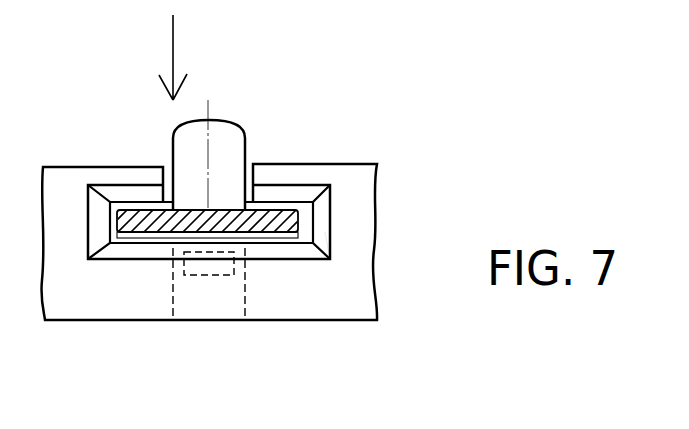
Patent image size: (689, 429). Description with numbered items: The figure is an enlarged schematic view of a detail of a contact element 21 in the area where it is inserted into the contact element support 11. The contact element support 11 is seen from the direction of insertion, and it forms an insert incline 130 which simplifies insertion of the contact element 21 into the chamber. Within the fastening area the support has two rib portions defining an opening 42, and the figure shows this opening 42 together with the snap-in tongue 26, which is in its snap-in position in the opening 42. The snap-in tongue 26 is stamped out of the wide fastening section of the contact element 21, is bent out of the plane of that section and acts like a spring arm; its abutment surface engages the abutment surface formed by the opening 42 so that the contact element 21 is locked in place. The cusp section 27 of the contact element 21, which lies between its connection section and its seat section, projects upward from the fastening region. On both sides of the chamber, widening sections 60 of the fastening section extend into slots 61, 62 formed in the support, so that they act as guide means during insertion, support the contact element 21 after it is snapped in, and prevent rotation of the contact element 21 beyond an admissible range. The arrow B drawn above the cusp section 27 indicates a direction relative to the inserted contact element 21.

The contact element support 11 is at (363, 167).
The contact element 21 is at (260, 143).
The snap-in tongue 26 is at (193, 283).
The cusp section 27 is at (232, 123).
The opening 42 is at (231, 308).
The widening sections 60 is at (128, 240).
The slot 61 is at (143, 200).
The slot 62 is at (282, 200).
The insert incline 130 is at (326, 233).
The pressing direction B is at (170, 58).